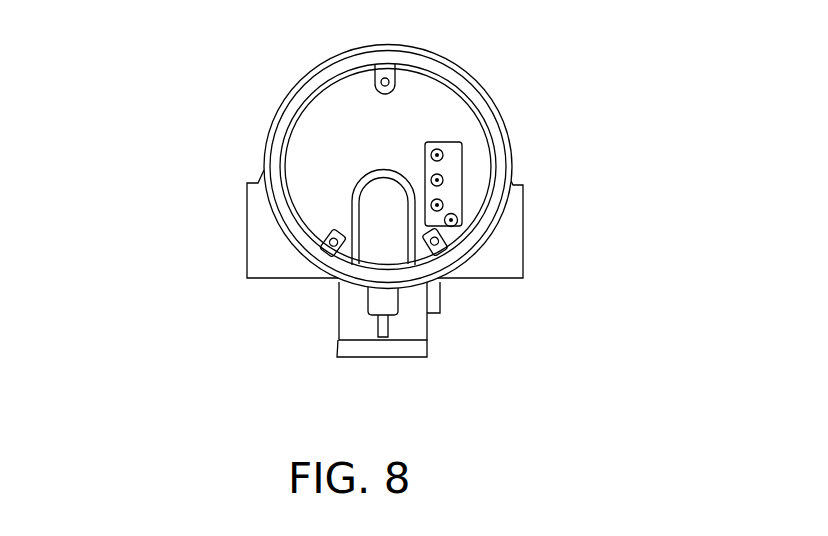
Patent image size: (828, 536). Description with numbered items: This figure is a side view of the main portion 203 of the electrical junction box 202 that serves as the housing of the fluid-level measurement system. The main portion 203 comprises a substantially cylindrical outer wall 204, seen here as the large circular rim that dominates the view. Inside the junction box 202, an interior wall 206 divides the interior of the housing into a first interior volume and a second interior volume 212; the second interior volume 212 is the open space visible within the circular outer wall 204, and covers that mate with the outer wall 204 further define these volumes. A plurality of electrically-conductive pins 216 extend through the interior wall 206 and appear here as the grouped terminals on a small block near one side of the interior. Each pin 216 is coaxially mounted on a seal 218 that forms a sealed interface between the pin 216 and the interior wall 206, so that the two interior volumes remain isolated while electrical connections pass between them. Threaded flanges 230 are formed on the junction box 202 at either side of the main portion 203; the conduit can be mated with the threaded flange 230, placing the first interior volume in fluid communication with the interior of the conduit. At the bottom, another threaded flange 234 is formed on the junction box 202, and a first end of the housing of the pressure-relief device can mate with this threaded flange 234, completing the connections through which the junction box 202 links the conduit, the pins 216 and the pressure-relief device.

The electrical junction box 202 is at (338, 189).
The main portion 203 is at (285, 94).
The outer wall 204 is at (447, 75).
The interior wall 206 is at (352, 99).
The second interior volume 212 is at (318, 164).
The electrically-conductive pins 216 is at (446, 152).
The seal 218 is at (454, 224).
The threaded flange 230 is at (247, 232).
The threaded flange 234 is at (337, 327).